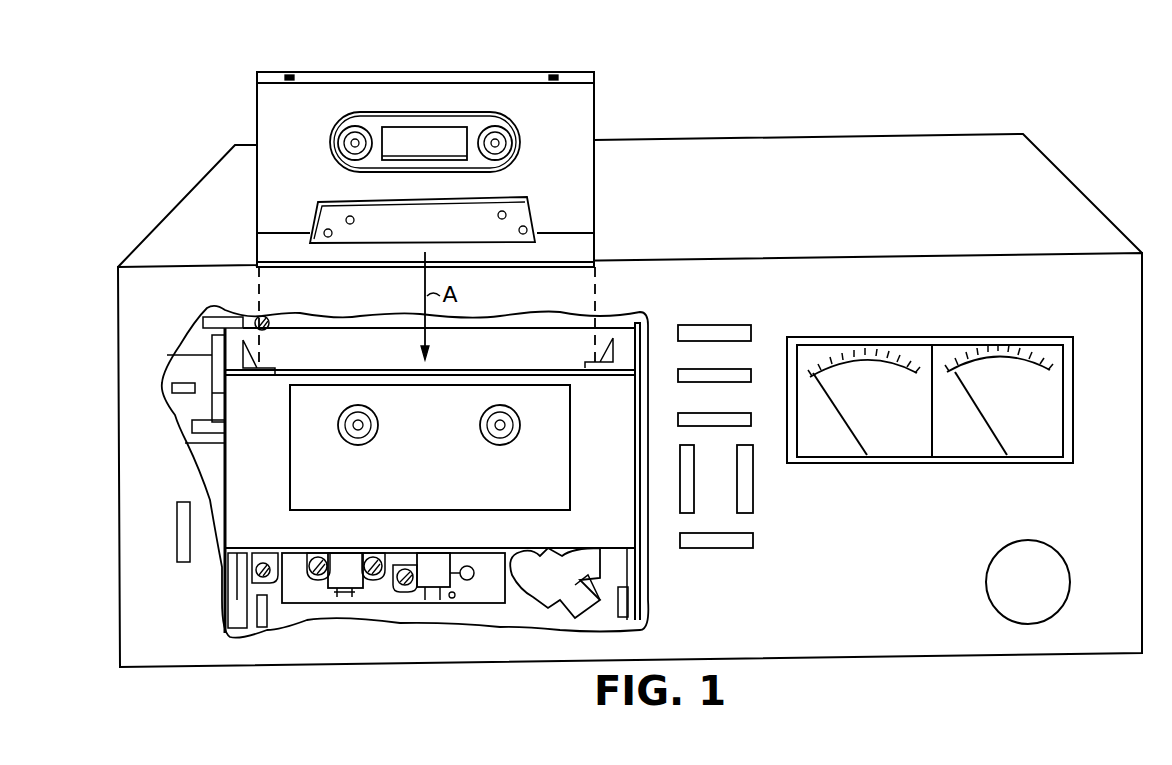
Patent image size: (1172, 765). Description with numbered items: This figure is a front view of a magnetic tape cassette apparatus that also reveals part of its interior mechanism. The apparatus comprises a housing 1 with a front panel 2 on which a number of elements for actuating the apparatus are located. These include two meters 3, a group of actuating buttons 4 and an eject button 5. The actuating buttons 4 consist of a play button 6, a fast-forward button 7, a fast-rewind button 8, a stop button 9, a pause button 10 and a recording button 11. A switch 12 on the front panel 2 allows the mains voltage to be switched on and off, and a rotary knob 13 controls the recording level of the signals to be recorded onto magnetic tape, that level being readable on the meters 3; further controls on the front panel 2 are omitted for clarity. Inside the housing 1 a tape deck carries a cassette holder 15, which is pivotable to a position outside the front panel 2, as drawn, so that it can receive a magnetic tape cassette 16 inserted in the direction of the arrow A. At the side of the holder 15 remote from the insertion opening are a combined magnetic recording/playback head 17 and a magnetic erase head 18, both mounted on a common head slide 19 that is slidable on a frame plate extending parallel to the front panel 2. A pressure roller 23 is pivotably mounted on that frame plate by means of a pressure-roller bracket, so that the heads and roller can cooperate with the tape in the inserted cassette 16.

The housing 1 is at (1104, 197).
The front panel 2 is at (1137, 316).
The meters 3 is at (940, 330).
The actuating buttons 4 is at (775, 513).
The eject button 5 is at (178, 387).
The play button 6 is at (712, 420).
The fast-forward button 7 is at (745, 463).
The fast-rewind button 8 is at (686, 463).
The stop button 9 is at (708, 544).
The pause button 10 is at (708, 374).
The recording button 11 is at (708, 330).
The switch 12 is at (182, 546).
The rotary knob 13 is at (1036, 548).
The cassette holder 15 is at (627, 512).
The magnetic tape cassette 16 is at (398, 76).
The combined magnetic recording/playback head 17 is at (432, 575).
The magnetic erase head 18 is at (345, 577).
The head slide 19 is at (483, 593).
The pressure roller 23 is at (517, 573).